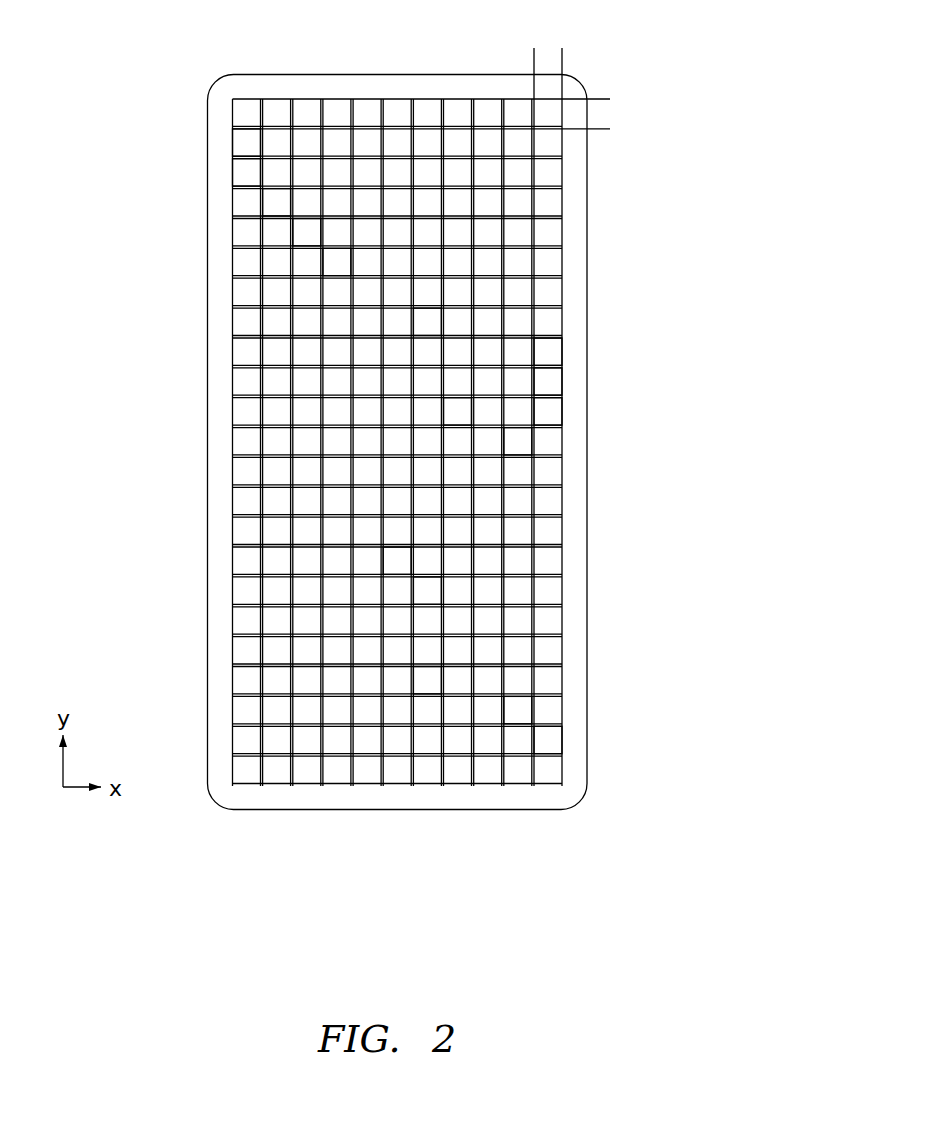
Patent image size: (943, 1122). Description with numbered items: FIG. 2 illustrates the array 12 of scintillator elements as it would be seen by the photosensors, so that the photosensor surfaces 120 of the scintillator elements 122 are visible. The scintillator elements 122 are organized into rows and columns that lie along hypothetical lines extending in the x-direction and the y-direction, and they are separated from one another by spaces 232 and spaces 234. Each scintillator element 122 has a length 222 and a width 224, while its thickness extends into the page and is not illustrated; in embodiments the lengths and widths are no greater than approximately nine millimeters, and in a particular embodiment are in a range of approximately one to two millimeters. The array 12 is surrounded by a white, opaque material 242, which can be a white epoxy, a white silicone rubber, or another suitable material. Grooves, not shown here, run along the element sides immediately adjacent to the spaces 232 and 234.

The array 12 is at (460, 409).
The photosensor surfaces 120 is at (432, 325).
The scintillator elements 122 is at (333, 263).
The length 222 is at (603, 72).
The width 224 is at (590, 60).
The spaces 232 is at (568, 189).
The spaces 234 is at (383, 97).
The white, opaque material 242 is at (207, 455).